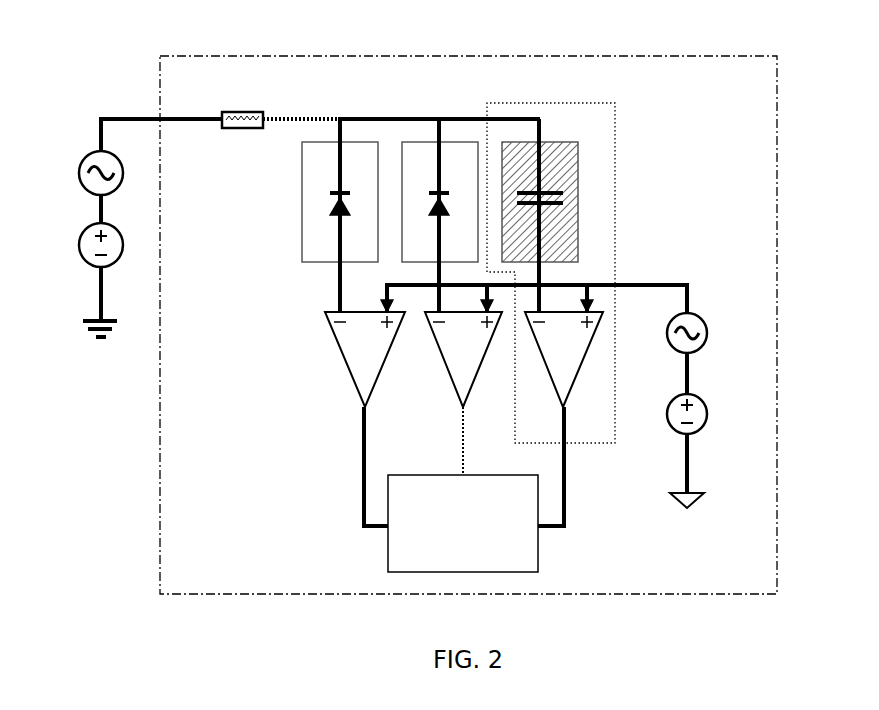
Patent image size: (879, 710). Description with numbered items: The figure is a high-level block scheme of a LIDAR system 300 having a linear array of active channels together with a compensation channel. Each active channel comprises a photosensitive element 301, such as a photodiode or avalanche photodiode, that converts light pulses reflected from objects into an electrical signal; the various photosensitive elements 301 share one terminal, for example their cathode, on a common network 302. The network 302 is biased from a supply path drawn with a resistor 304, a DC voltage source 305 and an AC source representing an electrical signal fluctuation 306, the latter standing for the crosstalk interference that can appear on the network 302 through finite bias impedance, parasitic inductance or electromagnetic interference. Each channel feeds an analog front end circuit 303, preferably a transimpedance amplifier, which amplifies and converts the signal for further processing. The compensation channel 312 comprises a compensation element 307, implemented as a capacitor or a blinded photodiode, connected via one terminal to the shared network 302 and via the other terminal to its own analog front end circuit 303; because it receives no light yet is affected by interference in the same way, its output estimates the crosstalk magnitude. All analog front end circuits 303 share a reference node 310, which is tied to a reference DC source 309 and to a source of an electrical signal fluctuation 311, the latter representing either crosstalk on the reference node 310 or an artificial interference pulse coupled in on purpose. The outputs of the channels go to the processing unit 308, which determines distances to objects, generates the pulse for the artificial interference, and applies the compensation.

The sensor circuit 300 is at (778, 130).
The photosensitive element 301 is at (420, 140).
The network 302 is at (320, 118).
The amplifiers 303 is at (464, 359).
The resistor 304 is at (226, 111).
The DC voltage source 305 is at (79, 245).
The electrical signal fluctuation 306 is at (79, 172).
The compensation element 307 is at (515, 140).
The processing unit 308 is at (463, 523).
The reference DC voltage source 309 is at (708, 414).
The reference node 310 is at (632, 285).
The electrical signal fluctuation 311 is at (708, 333).
The sensing channel 312 is at (615, 168).